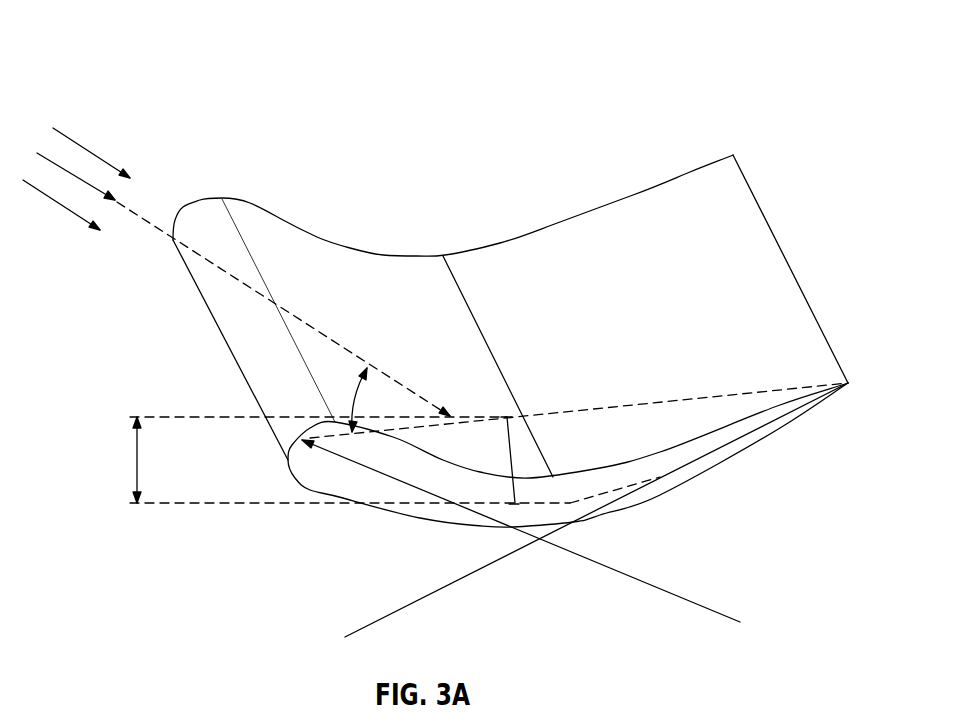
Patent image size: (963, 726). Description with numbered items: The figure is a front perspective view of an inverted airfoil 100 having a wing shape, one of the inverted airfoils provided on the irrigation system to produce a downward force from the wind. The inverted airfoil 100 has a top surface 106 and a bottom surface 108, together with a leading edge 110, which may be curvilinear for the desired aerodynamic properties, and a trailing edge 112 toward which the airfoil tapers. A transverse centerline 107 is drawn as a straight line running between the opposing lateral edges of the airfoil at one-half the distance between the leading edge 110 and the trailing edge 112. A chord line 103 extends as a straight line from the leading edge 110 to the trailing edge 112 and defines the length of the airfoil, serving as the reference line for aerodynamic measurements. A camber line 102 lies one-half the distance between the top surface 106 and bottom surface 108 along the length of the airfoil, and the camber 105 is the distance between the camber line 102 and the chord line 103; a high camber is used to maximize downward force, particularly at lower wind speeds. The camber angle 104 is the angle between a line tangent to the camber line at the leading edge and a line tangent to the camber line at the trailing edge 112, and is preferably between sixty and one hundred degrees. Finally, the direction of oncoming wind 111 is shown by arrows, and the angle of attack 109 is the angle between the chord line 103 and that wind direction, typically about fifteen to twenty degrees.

The inverted airfoil 100 is at (152, 44).
The camber line 102 is at (617, 492).
The chord line 103 is at (653, 402).
The camber angle 104 is at (520, 532).
The camber 105 is at (137, 460).
The top surface 106 is at (742, 298).
The transverse centerline 107 is at (472, 317).
The bottom surface 108 is at (788, 436).
The angle of attack 109 is at (357, 381).
The leading edge 110 is at (266, 380).
The direction of oncoming wind 111 is at (92, 153).
The trailing edge 112 is at (783, 250).